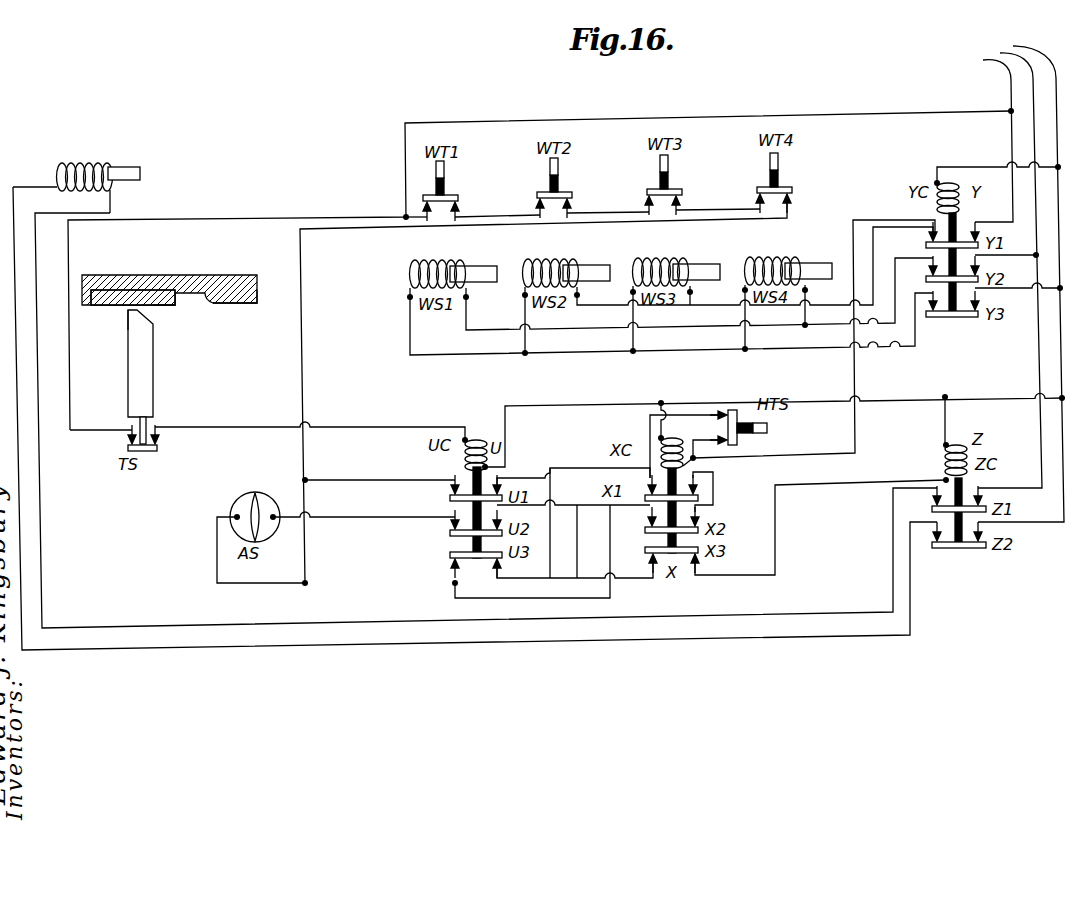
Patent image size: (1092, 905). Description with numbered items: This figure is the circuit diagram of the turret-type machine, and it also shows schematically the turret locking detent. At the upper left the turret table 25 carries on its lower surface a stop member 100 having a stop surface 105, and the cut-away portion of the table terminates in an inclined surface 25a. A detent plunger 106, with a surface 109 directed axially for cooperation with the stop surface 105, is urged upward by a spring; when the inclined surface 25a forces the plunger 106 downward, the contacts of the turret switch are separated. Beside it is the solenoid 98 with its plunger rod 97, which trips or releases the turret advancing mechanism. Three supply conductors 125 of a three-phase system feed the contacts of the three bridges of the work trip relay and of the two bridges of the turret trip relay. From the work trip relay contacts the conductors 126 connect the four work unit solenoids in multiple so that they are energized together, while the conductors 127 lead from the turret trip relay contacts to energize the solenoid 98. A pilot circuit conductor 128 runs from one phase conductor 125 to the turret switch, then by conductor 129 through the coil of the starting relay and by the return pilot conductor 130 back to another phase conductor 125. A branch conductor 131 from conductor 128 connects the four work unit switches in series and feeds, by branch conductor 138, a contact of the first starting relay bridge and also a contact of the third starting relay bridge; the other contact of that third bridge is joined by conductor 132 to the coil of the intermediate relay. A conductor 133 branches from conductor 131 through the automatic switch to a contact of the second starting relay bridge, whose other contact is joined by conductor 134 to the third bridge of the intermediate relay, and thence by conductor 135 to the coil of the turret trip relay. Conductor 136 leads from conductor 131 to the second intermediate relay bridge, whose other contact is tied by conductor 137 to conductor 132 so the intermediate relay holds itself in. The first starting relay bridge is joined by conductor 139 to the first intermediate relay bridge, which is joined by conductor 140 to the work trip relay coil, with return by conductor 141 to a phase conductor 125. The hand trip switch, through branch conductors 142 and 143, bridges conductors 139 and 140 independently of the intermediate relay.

The turret table 25 is at (185, 277).
The inclined surface 25a is at (214, 303).
The plunger rod 97 is at (131, 167).
The solenoid 98 is at (63, 175).
The stop member 100 is at (138, 300).
The stop surface 105 is at (160, 304).
The detent plunger 106 is at (155, 352).
The axially directed surface 109 is at (128, 317).
The supply conductors 125 is at (1015, 287).
The conductors 126 is at (843, 307).
The conductors 127 is at (721, 640).
The pilot circuit conductor 128 is at (265, 206).
The conductor 129 is at (224, 421).
The return pilot conductor 130 is at (577, 401).
The branch conductor 131 is at (406, 216).
The conductor 132 is at (500, 578).
The conductor 133 is at (385, 516).
The conductor 134 is at (620, 580).
The conductor 135 is at (778, 541).
The conductor 136 is at (533, 599).
The conductor 137 is at (716, 497).
The branch conductor 138 is at (371, 470).
The conductor 139 is at (577, 455).
The conductor 140 is at (705, 456).
The conductor 141 is at (962, 165).
The branch conductor 142 is at (710, 436).
The branch conductor 143 is at (684, 413).